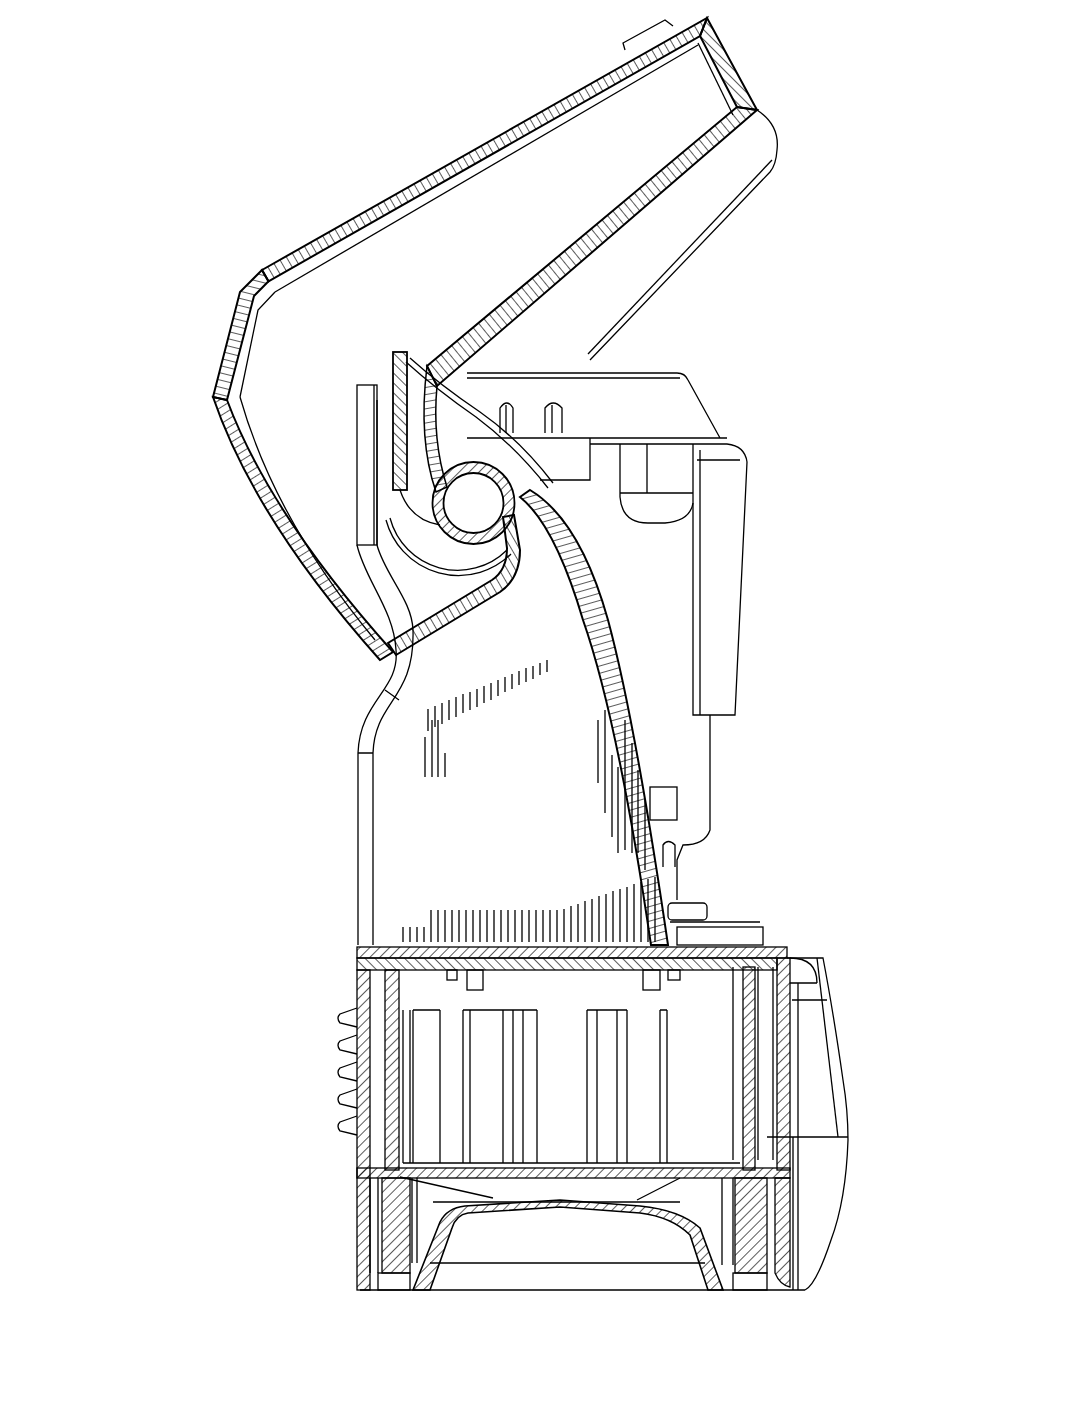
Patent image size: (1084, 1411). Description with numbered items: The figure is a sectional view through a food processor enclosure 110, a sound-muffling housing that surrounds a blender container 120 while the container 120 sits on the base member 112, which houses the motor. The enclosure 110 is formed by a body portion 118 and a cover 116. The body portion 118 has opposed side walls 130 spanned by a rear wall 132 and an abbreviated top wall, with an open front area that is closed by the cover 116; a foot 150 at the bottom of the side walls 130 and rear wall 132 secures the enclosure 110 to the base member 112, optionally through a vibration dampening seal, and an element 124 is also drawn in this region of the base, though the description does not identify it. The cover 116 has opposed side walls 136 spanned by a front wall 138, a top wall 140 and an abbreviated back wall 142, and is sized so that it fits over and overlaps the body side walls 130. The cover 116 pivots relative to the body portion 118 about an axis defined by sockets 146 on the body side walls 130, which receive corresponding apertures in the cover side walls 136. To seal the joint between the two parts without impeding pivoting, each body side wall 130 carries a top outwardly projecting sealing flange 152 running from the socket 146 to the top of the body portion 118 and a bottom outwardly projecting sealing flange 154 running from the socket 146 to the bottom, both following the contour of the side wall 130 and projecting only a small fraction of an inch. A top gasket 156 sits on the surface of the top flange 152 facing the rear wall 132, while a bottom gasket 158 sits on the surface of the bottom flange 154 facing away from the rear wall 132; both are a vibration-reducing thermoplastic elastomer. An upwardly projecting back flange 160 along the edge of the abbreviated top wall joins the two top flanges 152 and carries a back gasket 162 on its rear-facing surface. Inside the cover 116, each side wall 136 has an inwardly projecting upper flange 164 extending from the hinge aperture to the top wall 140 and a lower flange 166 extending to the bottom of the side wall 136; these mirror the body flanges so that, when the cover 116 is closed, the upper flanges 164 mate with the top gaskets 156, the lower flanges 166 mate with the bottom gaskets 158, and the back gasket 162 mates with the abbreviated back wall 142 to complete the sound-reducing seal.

The enclosure 110 is at (152, 253).
The base member 112 is at (357, 1200).
The cover 116 is at (735, 53).
The body portion 118 is at (350, 881).
The container 120 is at (746, 517).
The latch 124 is at (688, 912).
The side walls 130 is at (607, 822).
The rear wall 132 is at (357, 790).
The side walls 136 is at (720, 193).
The front wall 138 is at (452, 172).
The top wall 140 is at (253, 468).
The abbreviated back wall 142 is at (342, 630).
The sockets 146 is at (447, 527).
The foot 150 is at (747, 937).
The top sealing flange 152 is at (385, 400).
The bottom sealing flange 154 is at (612, 752).
The top gasket 156 is at (390, 455).
The bottom gasket 158 is at (595, 597).
The back flange 160 is at (405, 355).
The back gasket 162 is at (388, 355).
The upper flange 164 is at (470, 608).
The lower flange 166 is at (622, 216).